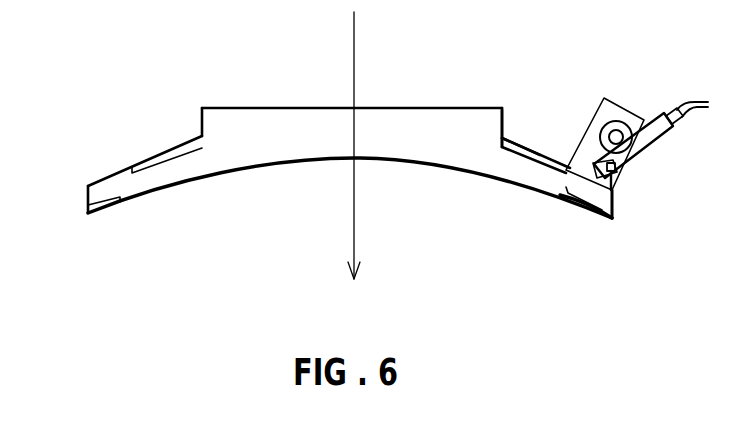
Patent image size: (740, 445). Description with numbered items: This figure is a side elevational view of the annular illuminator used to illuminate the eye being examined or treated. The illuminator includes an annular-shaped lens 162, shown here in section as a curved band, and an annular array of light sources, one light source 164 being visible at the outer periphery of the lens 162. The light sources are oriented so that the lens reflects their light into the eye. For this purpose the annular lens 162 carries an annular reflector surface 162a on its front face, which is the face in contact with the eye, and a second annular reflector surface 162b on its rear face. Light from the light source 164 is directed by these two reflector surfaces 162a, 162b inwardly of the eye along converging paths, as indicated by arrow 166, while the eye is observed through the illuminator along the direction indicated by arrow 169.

The annular lens 162 is at (187, 138).
The annular reflector surface 162a is at (612, 222).
The annular reflector surface 162b is at (512, 140).
The light source 164 is at (648, 122).
The arrows indicating light paths 166 is at (562, 150).
The arrow indicating observation direction 169 is at (354, 227).